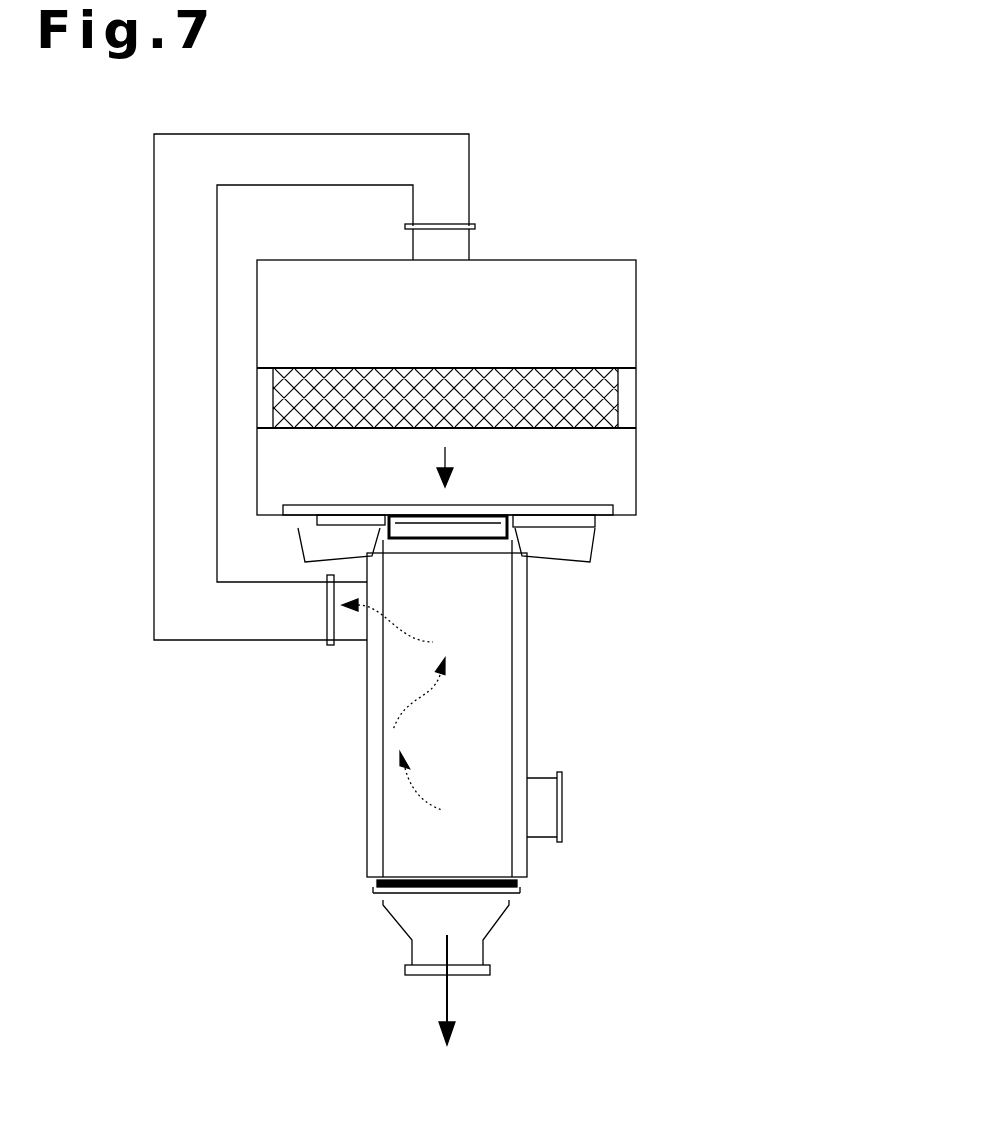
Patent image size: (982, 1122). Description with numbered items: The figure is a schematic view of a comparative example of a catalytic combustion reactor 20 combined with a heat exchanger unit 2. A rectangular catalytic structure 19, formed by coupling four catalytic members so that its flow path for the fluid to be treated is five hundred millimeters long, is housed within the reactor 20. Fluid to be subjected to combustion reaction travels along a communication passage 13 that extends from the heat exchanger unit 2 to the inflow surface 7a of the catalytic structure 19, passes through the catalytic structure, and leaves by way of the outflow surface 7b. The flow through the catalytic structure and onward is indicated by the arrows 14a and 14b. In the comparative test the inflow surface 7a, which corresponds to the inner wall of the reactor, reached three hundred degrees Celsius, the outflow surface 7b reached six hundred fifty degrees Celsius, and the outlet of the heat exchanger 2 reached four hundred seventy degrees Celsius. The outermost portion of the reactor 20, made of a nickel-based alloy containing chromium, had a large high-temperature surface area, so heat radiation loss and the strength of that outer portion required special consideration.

The heat exchanger unit 2 is at (508, 678).
The inflow surface of the catalytic structure 7a is at (526, 352).
The outflow surface of the catalytic structure 7b is at (546, 445).
The communication passage 13 is at (184, 364).
The gas flow through filter 14a is at (477, 469).
The discharged gas 14b is at (451, 1011).
The rectangular catalytic structure 19 is at (578, 360).
The reactor 20 is at (653, 454).